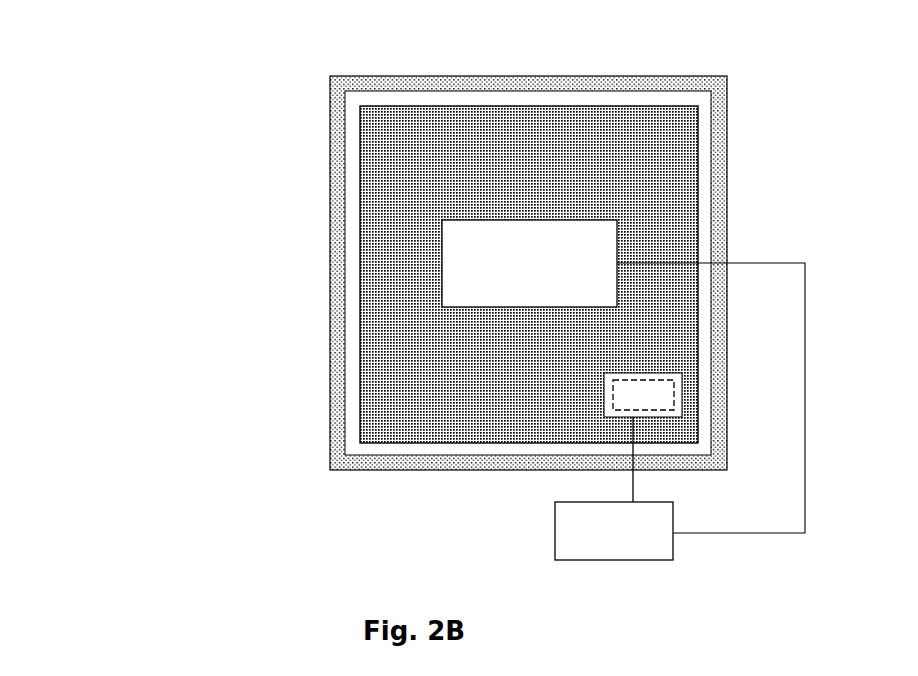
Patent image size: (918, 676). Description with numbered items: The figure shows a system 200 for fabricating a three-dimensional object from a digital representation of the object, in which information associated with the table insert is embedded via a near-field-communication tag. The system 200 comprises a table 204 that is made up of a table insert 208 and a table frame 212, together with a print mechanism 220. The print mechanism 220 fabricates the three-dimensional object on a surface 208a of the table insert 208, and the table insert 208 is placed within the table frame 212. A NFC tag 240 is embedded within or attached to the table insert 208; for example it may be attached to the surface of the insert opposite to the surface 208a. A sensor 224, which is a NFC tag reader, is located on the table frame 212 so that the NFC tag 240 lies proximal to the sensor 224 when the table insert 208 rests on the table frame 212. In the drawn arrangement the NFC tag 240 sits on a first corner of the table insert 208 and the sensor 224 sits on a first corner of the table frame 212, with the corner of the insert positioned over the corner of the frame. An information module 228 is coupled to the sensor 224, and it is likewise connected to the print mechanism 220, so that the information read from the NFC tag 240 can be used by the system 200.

The system 200 is at (430, 294).
The table 204 is at (391, 274).
The table insert 208 is at (422, 274).
The surface 208a is at (394, 431).
The table frame 212 is at (336, 470).
The print mechanism 220 is at (529, 263).
The sensor 224 is at (688, 438).
The information module 228 is at (614, 488).
The NFC tag 240 is at (643, 395).